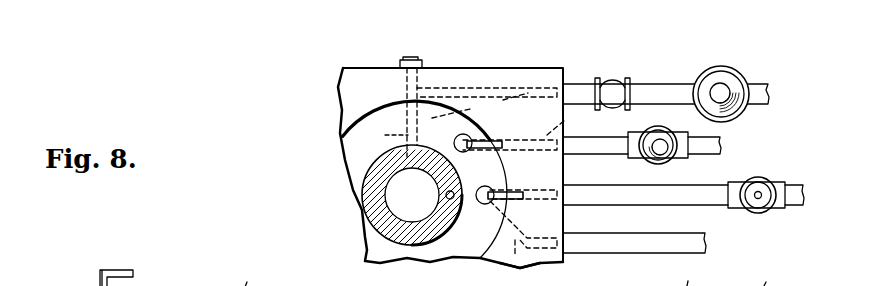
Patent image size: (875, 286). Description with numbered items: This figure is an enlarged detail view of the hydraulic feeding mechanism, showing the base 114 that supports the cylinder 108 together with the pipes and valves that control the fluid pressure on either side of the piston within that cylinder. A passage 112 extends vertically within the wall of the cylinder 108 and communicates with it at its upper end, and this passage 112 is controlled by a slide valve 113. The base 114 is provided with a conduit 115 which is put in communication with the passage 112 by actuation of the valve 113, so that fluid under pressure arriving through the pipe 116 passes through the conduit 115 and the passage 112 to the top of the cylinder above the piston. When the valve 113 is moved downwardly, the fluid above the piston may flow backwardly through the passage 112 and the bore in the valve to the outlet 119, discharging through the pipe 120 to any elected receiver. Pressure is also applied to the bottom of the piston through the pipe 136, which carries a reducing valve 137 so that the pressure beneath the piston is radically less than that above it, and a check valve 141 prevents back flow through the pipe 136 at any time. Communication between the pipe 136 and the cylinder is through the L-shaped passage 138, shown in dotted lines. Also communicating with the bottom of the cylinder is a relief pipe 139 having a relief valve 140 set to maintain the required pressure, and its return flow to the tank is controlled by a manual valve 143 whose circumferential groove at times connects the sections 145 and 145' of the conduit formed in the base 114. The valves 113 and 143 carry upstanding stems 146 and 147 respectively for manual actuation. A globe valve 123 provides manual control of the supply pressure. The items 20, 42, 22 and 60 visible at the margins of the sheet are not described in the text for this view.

The base 114 is at (355, 82).
The cylinder 108 is at (374, 182).
The passage 112 is at (446, 195).
The slide valve 113 is at (484, 187).
The upstanding stem 146 is at (505, 200).
The manual valve 143 is at (472, 135).
The upstanding stem 147 is at (497, 148).
The L-shaped passage 138 is at (480, 105).
The conduit section 145' is at (380, 137).
The outlet 119 is at (518, 266).
The pipe 136 is at (655, 84).
The check valve 141 is at (610, 80).
The reducing valve 137 is at (727, 78).
The conduit section 145 is at (642, 131).
The relief valve 140 is at (667, 156).
The relief pipe 139 is at (610, 138).
The conduit 115 is at (572, 166).
The pipe 116 is at (627, 198).
The globe valve 123 is at (760, 176).
The pipe 120 is at (612, 247).
The member 20 is at (697, 275).
The member 42 is at (775, 275).
The member 22 is at (256, 275).
The bracket 60 is at (100, 275).